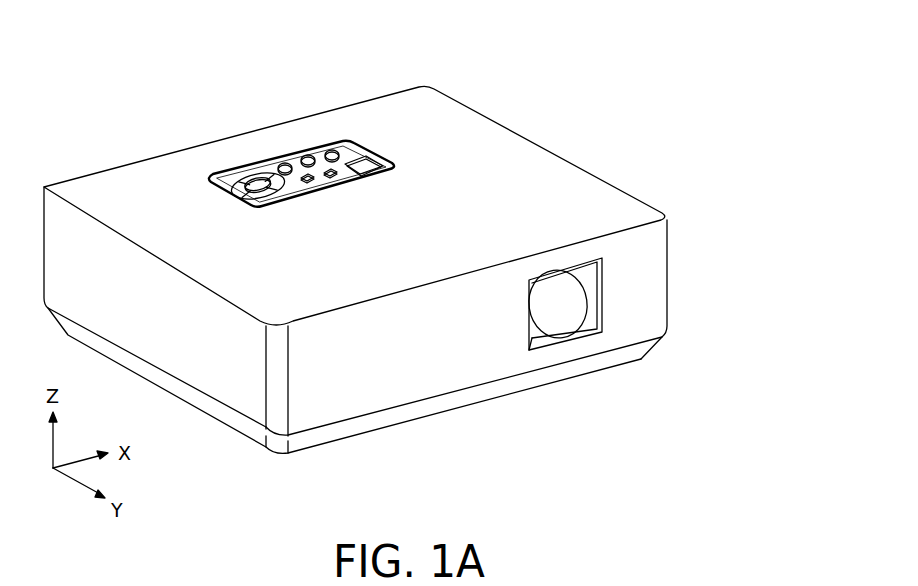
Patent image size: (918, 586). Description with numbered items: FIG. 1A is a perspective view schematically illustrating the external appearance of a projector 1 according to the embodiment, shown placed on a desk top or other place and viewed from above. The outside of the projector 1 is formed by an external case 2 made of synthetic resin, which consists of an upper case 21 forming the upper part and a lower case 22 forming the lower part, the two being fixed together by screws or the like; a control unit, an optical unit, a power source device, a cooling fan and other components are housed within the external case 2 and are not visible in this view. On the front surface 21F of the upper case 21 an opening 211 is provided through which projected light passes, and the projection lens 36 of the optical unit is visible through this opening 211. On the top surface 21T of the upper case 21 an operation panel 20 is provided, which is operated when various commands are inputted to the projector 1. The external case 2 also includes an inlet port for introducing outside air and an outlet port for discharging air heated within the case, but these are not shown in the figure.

The projector 1 is at (512, 54).
The external case 2 is at (733, 291).
The operation panel 20 is at (347, 143).
The upper case 21 is at (655, 305).
The top surface 21T is at (523, 150).
The front surface 21F is at (403, 392).
The lower case 22 is at (637, 353).
The opening 211 is at (543, 348).
The projection lens 36 is at (577, 328).